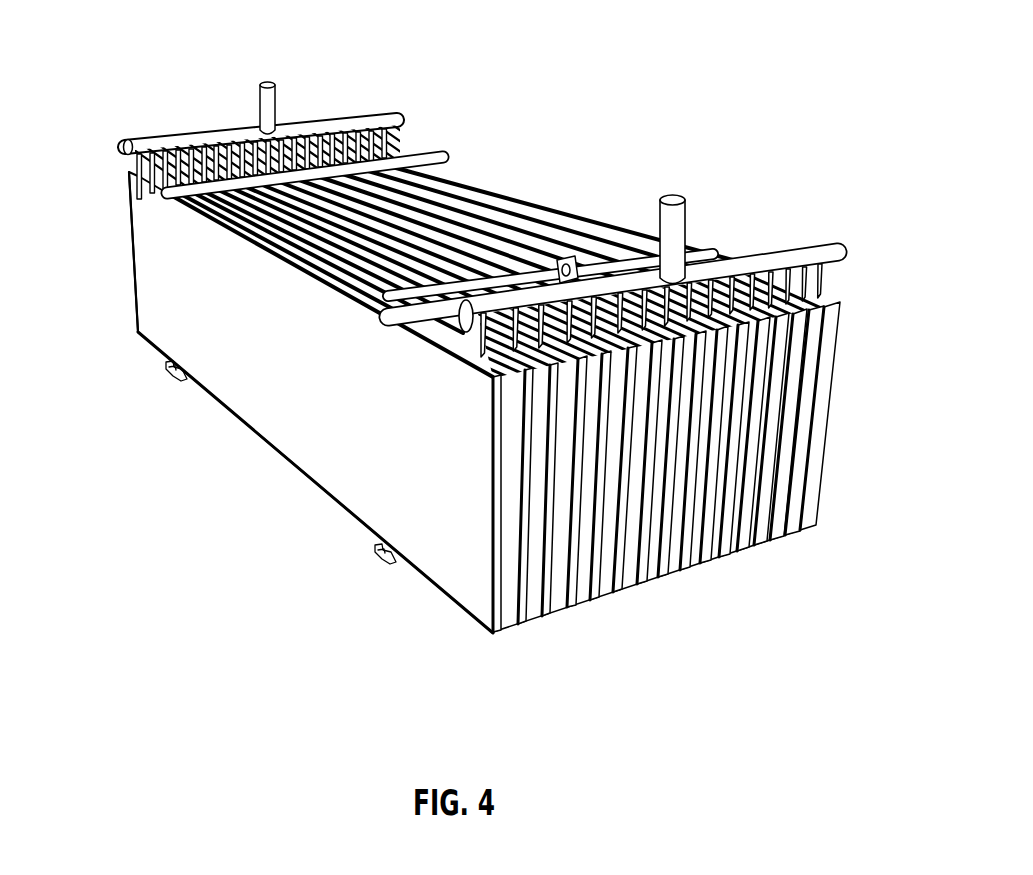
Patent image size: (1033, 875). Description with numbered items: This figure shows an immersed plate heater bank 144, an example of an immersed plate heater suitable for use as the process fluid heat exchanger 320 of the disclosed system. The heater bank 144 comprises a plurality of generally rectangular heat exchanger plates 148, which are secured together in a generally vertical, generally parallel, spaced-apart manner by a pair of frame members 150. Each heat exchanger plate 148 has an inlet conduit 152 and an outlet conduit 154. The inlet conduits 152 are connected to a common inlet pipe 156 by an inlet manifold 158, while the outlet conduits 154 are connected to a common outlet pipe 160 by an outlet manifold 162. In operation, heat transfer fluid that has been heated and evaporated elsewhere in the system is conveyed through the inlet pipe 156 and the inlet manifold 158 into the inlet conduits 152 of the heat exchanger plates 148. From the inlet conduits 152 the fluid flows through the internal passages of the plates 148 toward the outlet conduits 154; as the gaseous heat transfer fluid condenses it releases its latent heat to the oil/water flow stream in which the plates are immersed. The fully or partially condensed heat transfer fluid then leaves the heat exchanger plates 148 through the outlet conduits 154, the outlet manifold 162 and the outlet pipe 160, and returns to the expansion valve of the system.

The process fluid heat exchanger 320 is at (452, 363).
The immersed plate heater bank 144 is at (452, 379).
The heat exchanger plate 148 is at (256, 412).
The frame member 150 is at (437, 152).
The inlet conduit 152 is at (507, 358).
The outlet conduit 154 is at (158, 152).
The inlet pipe 156 is at (678, 197).
The inlet manifold 158 is at (800, 253).
The outlet pipe 160 is at (273, 104).
The outlet manifold 162 is at (380, 120).